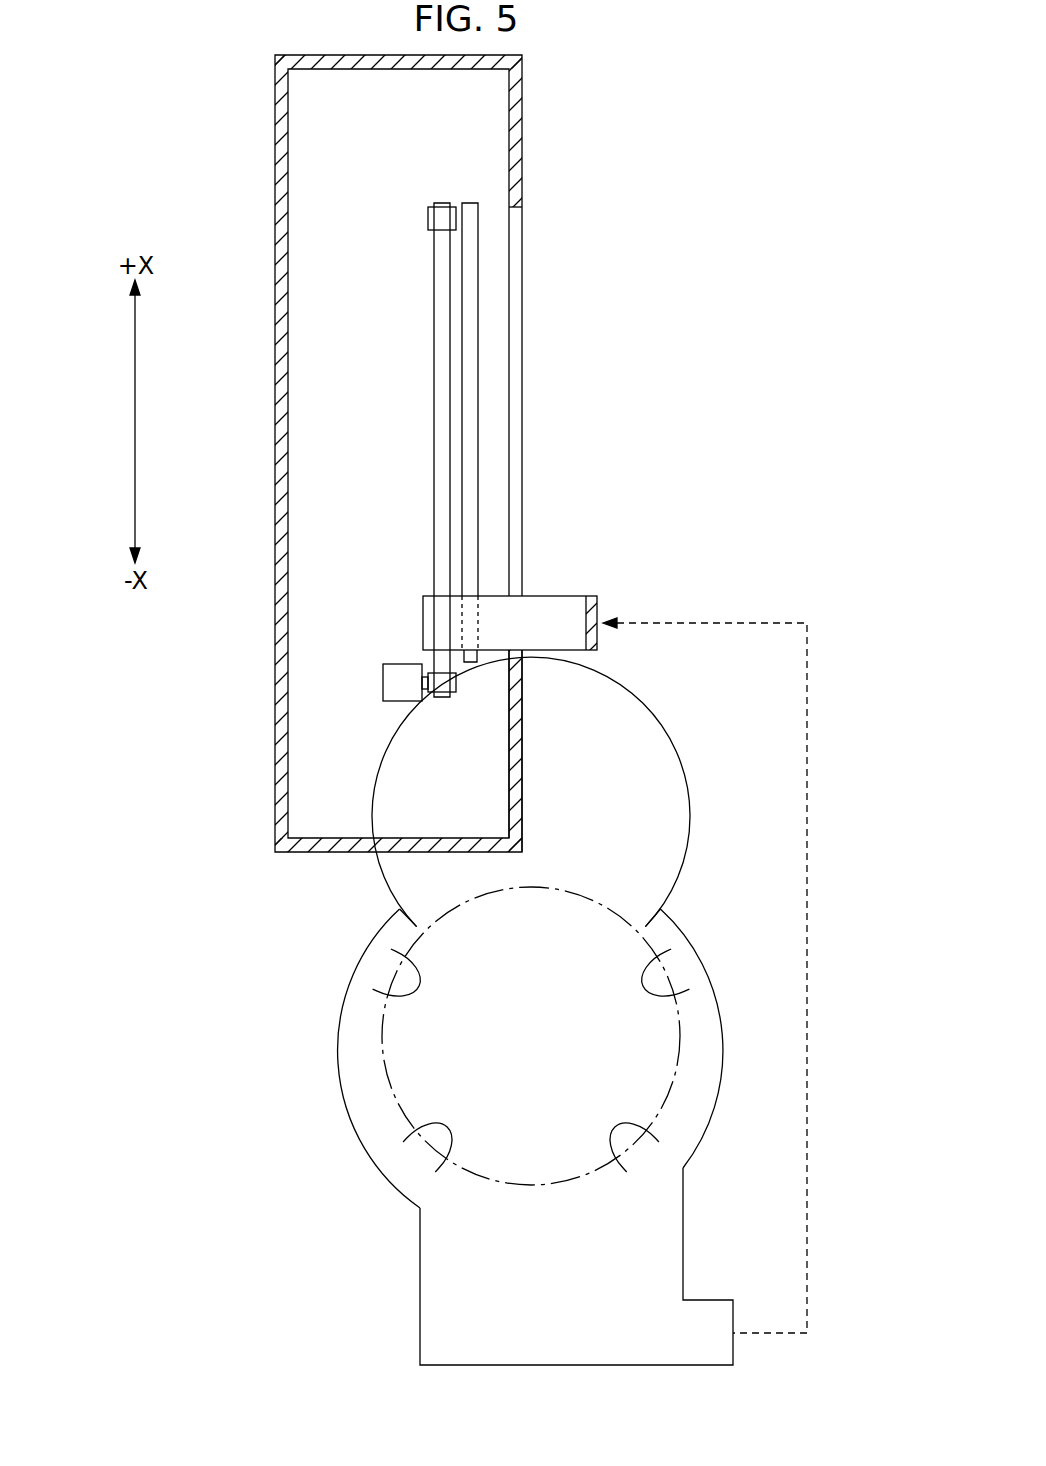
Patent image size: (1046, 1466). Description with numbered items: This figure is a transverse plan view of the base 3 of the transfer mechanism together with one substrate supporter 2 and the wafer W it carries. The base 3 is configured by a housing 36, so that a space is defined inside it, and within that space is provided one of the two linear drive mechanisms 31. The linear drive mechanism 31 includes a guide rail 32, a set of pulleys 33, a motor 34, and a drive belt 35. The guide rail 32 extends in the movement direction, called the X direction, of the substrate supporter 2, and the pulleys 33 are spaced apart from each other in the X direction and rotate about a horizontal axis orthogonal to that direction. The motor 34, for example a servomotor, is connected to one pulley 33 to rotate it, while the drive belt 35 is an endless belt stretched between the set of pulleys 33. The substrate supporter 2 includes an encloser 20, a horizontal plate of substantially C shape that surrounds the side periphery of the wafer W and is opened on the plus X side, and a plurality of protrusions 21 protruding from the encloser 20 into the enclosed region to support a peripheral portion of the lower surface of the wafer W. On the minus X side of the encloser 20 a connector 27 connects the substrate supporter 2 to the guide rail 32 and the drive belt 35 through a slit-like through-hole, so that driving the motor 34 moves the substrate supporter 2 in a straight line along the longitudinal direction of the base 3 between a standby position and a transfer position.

The substrate supporter 2 is at (505, 1011).
The base 3 is at (380, 453).
The encloser 20 is at (420, 1328).
The protrusions 21 is at (393, 968).
The connector 27 is at (560, 596).
The linear drive mechanism 31 is at (398, 464).
The guide rail 32 is at (478, 370).
The pulleys 33 is at (428, 215).
The motor 34 is at (383, 683).
The drive belt 35 is at (434, 528).
The housing 36 is at (527, 745).
The wafer W is at (594, 890).